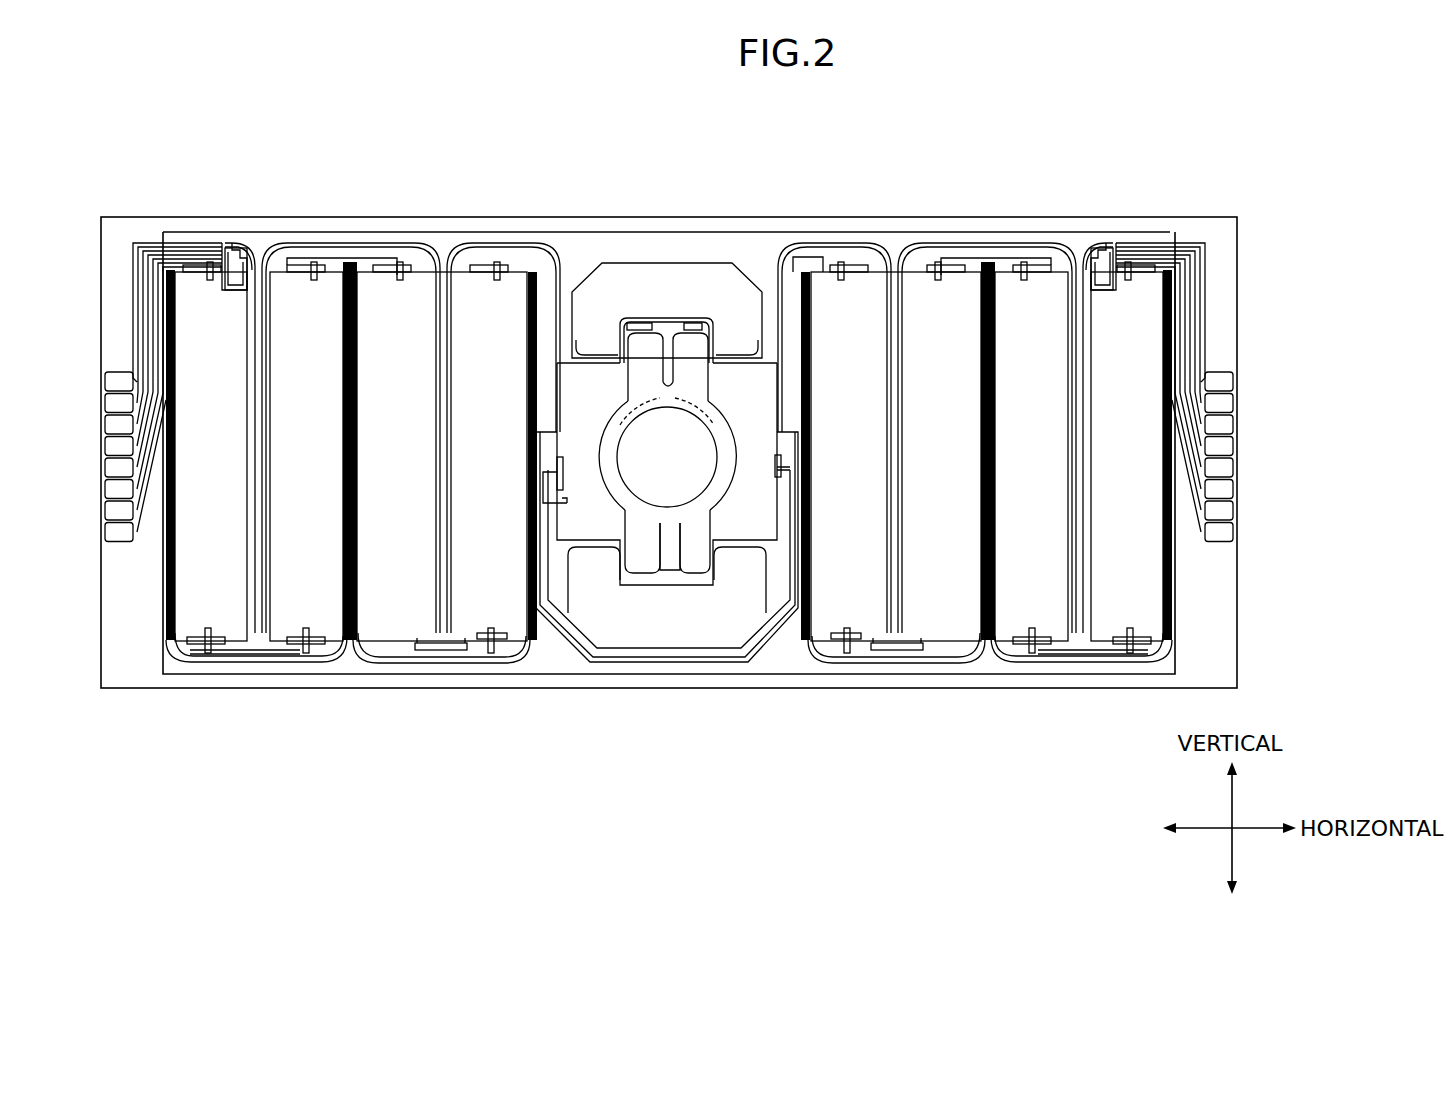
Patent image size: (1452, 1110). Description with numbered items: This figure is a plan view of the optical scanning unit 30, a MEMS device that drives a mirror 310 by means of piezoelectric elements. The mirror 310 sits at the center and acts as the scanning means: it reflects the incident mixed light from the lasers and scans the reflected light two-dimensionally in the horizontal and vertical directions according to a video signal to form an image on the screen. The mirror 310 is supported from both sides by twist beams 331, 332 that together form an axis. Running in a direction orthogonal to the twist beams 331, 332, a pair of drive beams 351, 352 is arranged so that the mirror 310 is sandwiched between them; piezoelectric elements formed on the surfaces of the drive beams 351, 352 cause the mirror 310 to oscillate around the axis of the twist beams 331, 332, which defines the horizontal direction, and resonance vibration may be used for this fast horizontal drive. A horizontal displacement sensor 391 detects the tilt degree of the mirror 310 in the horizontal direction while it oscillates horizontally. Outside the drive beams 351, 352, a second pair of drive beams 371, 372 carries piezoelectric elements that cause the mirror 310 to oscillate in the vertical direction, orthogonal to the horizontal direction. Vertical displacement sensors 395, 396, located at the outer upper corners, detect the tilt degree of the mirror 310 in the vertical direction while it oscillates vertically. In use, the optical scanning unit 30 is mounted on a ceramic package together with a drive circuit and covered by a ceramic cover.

The optical scanning unit 30 is at (138, 153).
The mirror 310 is at (672, 473).
The twist beam 331 is at (668, 540).
The twist beam 332 is at (665, 357).
The drive beam 351 is at (748, 522).
The drive beam 352 is at (600, 523).
The drive beam 371 is at (826, 648).
The drive beam 372 is at (512, 648).
The horizontal displacement sensor 391 is at (640, 325).
The vertical displacement sensor 395 is at (1083, 268).
The vertical displacement sensor 396 is at (247, 268).